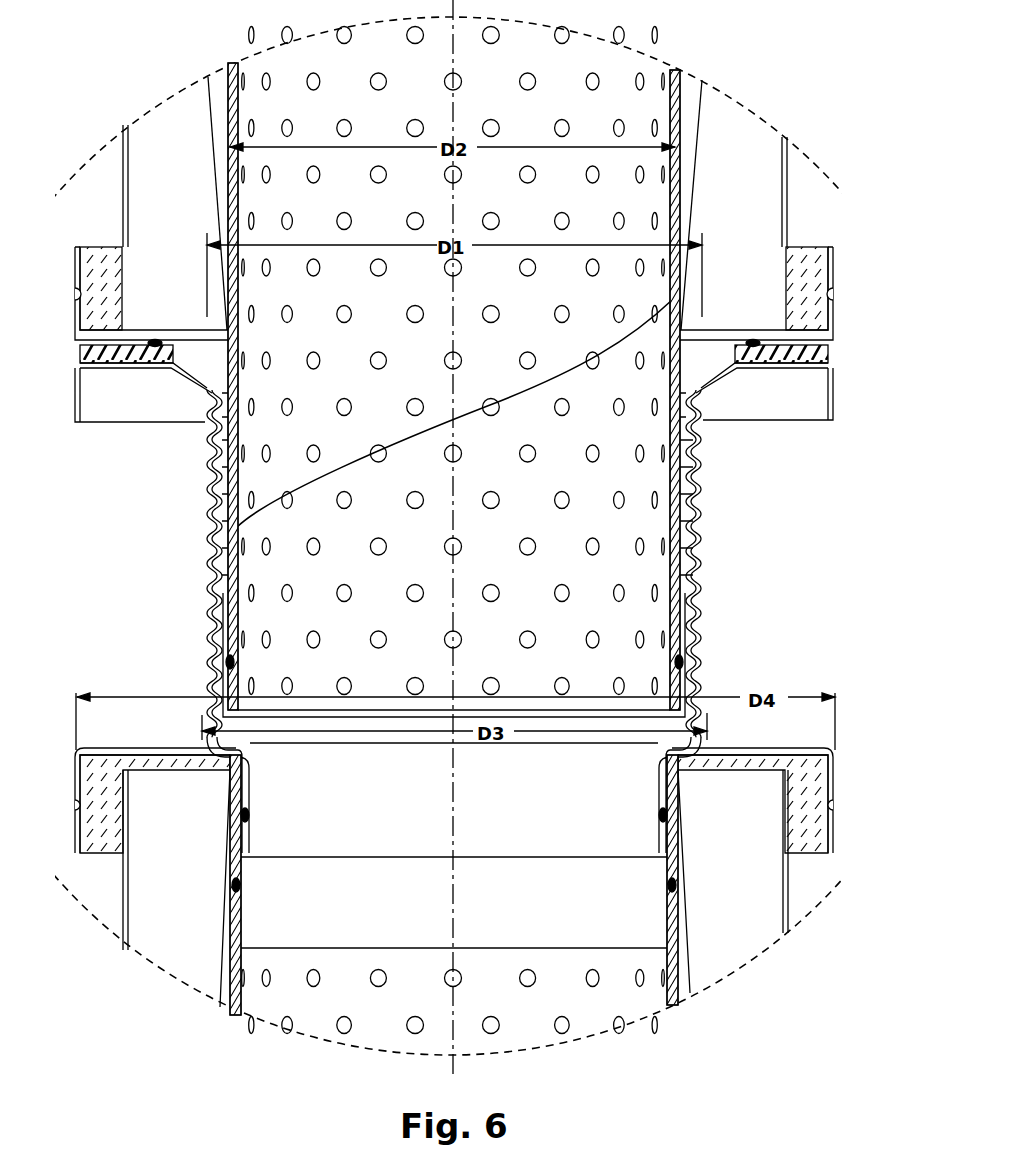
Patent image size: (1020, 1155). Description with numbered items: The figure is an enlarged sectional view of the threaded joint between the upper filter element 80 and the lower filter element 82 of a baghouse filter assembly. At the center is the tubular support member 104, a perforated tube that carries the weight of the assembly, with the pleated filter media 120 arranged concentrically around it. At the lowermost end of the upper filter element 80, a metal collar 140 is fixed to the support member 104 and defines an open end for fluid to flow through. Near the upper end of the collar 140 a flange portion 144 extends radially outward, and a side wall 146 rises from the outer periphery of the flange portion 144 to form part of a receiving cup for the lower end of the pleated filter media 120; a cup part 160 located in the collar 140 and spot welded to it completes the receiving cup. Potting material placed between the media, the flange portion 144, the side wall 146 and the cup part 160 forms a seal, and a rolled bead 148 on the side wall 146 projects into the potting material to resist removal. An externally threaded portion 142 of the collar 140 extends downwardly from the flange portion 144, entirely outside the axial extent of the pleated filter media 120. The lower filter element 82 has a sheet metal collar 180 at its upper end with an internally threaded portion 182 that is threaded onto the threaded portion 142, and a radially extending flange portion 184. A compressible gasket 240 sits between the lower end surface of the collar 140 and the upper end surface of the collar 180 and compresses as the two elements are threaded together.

The tubular support member 104 is at (683, 80).
The pleated filter media 120 is at (730, 137).
The upper filter element 80 is at (792, 177).
The cup part 160 is at (683, 203).
The side wall 146 is at (833, 262).
The rolled bead 148 is at (834, 294).
The compressible gasket 240 is at (829, 352).
The flange portion 144 is at (792, 352).
The collar 180 is at (712, 432).
The internally threaded portion 182 is at (703, 635).
The lower filter element 82 is at (801, 891).
The collar 140 is at (64, 336).
The flange portion 184 is at (113, 368).
The externally threaded portion 142 is at (207, 433).